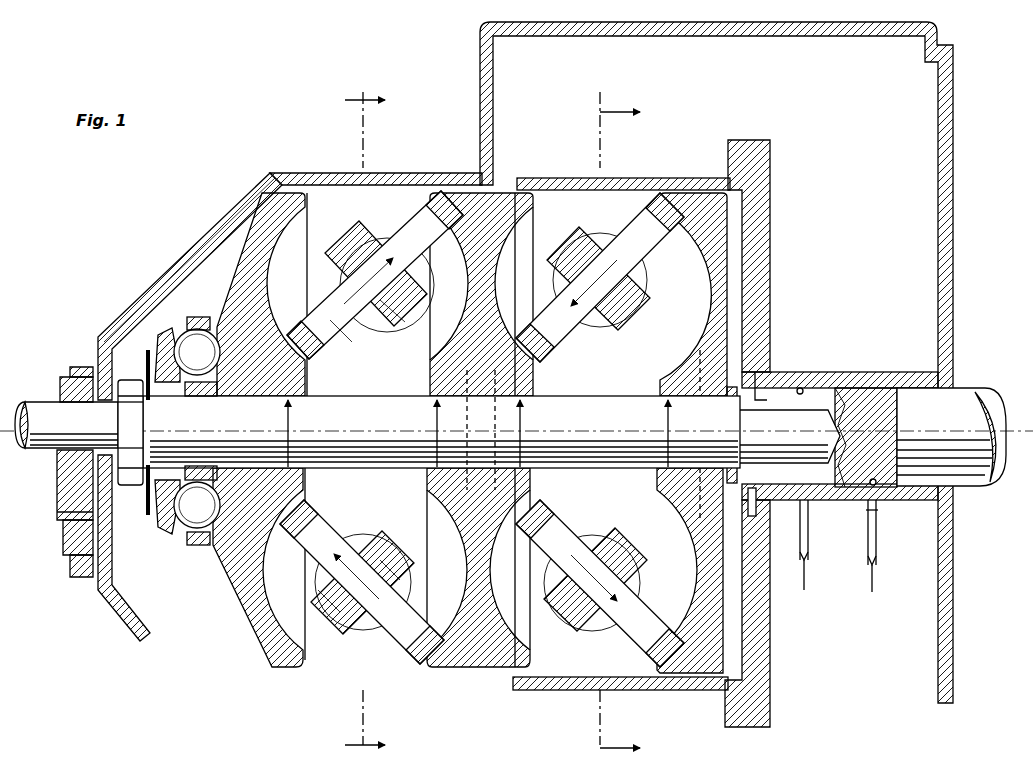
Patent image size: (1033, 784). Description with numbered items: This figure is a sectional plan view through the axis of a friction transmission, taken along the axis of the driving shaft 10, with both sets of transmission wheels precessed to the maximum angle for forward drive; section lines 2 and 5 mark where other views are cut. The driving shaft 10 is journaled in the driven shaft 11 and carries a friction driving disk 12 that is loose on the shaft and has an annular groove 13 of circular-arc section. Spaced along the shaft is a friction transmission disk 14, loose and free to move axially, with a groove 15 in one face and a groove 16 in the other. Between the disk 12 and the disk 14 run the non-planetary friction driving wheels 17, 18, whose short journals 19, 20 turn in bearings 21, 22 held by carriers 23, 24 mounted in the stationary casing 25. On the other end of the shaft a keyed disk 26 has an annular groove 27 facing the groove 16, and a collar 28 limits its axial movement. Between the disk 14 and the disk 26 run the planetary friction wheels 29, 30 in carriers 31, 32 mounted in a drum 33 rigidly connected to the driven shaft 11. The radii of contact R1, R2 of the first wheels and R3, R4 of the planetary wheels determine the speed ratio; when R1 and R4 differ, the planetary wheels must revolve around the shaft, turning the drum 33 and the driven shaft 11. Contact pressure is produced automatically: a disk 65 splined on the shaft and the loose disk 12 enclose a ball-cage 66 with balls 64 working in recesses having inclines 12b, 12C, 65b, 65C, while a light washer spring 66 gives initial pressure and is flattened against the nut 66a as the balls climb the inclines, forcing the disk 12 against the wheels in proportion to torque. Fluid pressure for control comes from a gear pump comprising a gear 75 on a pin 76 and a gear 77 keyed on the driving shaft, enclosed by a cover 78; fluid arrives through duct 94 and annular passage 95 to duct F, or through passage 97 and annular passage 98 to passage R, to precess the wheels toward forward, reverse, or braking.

The driving shaft 10 is at (52, 408).
The driven shaft 11 is at (970, 415).
The friction driving disk 12 is at (250, 240).
The incline 12b is at (244, 404).
The incline 12C is at (230, 418).
The annular groove 13 is at (338, 175).
The friction transmission disk 14 is at (468, 182).
The groove 15 is at (439, 428).
The groove 16 is at (520, 428).
The friction driving wheel 17 is at (405, 232).
The friction driving wheel 18 is at (420, 650).
The journal 19 is at (398, 342).
The journal 20 is at (328, 625).
The bearing 21 is at (370, 330).
The bearing 22 is at (382, 530).
The carrier 23 is at (375, 240).
The carrier 24 is at (372, 625).
The casing 25 is at (272, 175).
The disk 26 is at (700, 215).
The annular groove 27 is at (692, 433).
The collar 28 is at (762, 418).
The friction wheel 29 is at (636, 645).
The friction wheel 30 is at (655, 213).
The carrier 31 is at (607, 330).
The carrier 32 is at (614, 525).
The drum 33 is at (566, 178).
The balls 64 is at (185, 345).
The disk 65 is at (150, 365).
The incline 65b is at (107, 438).
The incline 65C is at (107, 410).
The ball-cage 66 is at (200, 318).
The nut 66a is at (128, 478).
The gear 75 is at (70, 536).
The pin 76 is at (57, 512).
The gear 77 is at (70, 458).
The cover 78 is at (70, 565).
The duct 94 is at (876, 540).
The annular passage 95 is at (878, 510).
The passage 97 is at (808, 549).
The annular passage 98 is at (806, 385).
The passage R is at (765, 372).
The radius of contact R1 is at (301, 433).
The radius of contact R2 is at (449, 433).
The radius of contact R3 is at (532, 433).
The radius of contact R4 is at (666, 433).
The duct F is at (755, 516).
The section line 2- 2 is at (350, 432).
The section line 5- 5 is at (615, 430).